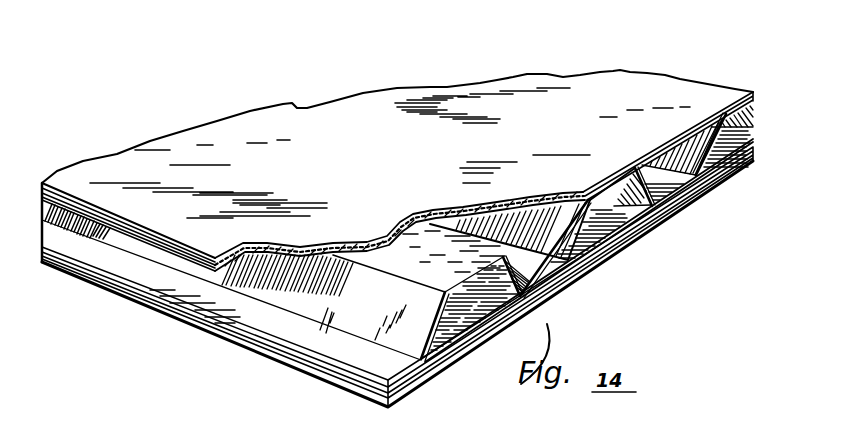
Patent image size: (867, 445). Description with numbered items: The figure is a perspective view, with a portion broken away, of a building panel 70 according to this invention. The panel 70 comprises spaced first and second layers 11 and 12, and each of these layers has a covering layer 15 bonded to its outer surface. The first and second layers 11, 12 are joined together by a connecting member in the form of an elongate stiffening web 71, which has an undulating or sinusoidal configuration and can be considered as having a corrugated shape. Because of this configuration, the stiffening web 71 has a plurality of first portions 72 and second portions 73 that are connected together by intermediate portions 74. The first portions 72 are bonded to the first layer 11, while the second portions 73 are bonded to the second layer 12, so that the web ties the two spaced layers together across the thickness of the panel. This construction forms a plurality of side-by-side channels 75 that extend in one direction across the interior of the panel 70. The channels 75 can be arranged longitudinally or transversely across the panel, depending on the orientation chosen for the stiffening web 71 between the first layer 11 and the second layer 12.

The building panel 70 is at (205, 134).
The stiffening web 71 is at (347, 352).
The first portions 72 is at (385, 258).
The second portions 73 is at (690, 192).
The intermediate portions 74 is at (651, 205).
The channels 75 is at (612, 222).
The first layer 11 is at (751, 96).
The second layer 12 is at (770, 150).
The covering layer 15 is at (718, 178).